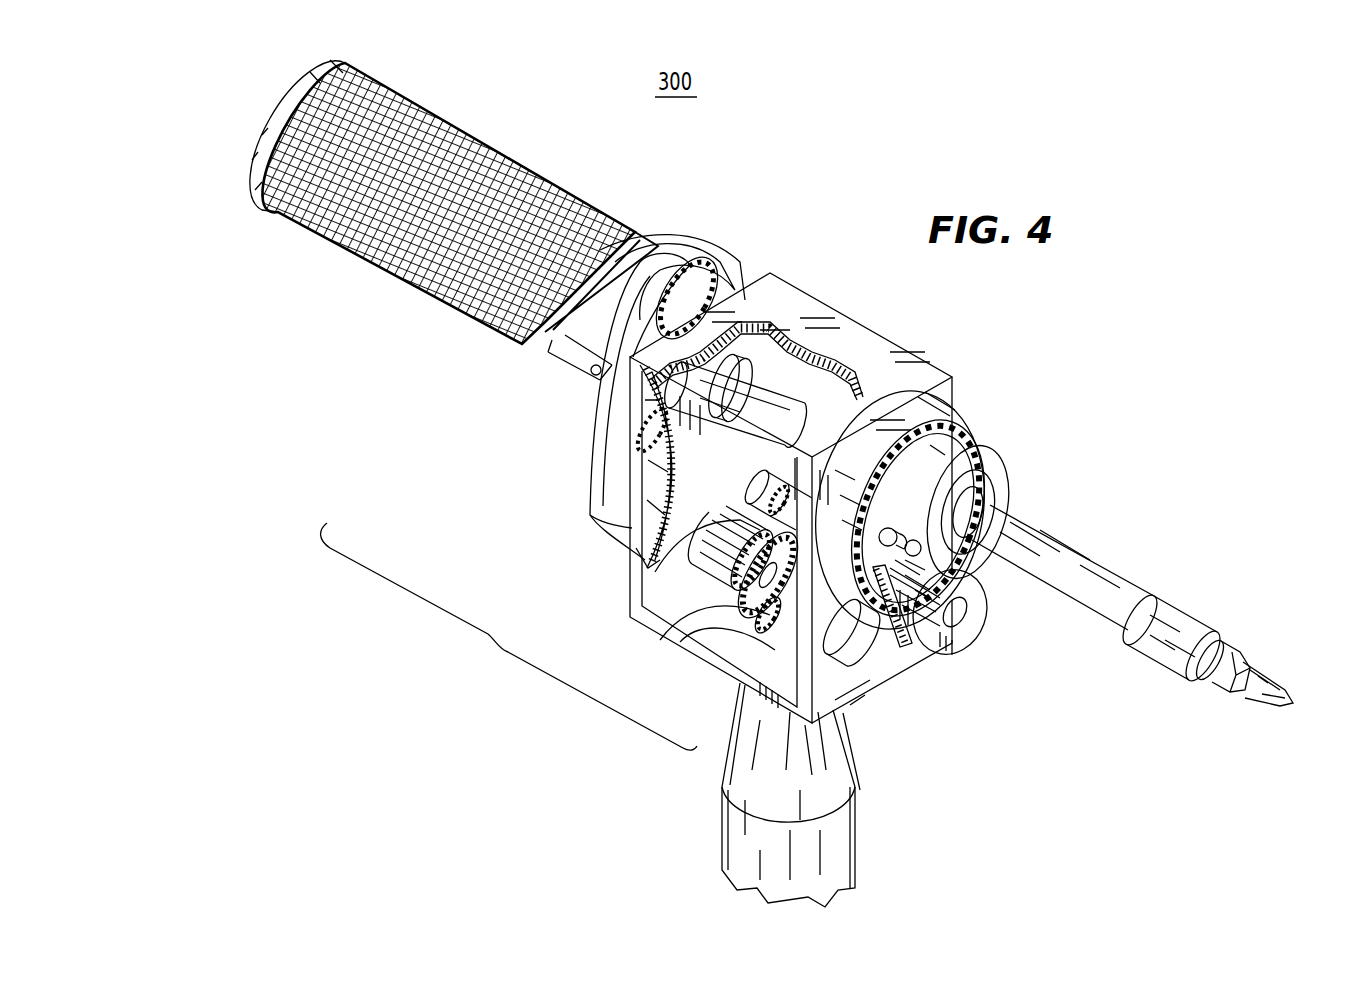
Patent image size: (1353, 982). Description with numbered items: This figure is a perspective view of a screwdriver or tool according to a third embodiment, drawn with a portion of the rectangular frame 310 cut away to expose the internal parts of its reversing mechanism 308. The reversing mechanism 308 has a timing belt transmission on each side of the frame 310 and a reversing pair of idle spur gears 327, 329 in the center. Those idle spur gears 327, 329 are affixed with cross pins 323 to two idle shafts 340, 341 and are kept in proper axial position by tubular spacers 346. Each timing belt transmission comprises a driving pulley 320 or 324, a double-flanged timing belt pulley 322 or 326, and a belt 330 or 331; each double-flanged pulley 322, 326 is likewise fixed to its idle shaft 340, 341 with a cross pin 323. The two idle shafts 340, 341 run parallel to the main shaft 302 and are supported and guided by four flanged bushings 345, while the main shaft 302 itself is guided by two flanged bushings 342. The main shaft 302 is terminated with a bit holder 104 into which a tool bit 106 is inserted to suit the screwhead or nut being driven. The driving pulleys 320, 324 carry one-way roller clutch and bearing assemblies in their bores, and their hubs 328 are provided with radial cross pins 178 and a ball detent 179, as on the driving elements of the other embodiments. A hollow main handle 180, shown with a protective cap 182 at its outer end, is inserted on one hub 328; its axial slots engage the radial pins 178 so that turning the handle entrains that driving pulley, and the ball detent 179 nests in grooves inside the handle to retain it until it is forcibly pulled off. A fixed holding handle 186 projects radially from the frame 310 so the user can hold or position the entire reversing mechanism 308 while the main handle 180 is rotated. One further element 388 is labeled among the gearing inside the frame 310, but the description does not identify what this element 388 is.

The bit holder 104 is at (1222, 642).
The tool bit 106 is at (1278, 688).
The radial pins 178 is at (562, 368).
The ball detent 179 is at (910, 543).
The main handle 180 is at (383, 74).
The protective cap 182 is at (300, 82).
The fixed holding handle 186 is at (850, 851).
The main shaft 302 is at (612, 243).
The reversing mechanism 308 is at (509, 636).
The frame 310 is at (772, 300).
The driving pulley 320 is at (712, 290).
The double-flanged timing belt pulley 322 is at (640, 495).
The cross pins 323 is at (665, 637).
The driving pulley 324 is at (982, 432).
The double-flanged timing belt pulley 326 is at (918, 655).
The idle spur gear 327 is at (682, 640).
The hub 328 is at (660, 256).
The idle spur gear 329 is at (665, 562).
The belt 330 is at (603, 410).
The belt 331 is at (955, 397).
The idle shaft 340 is at (705, 628).
The idle shaft 341 is at (753, 480).
The flanged bushings 342 is at (792, 328).
The flanged bushings 345 is at (745, 485).
The tubular spacers 346 is at (640, 560).
The spur gear 388 is at (745, 645).